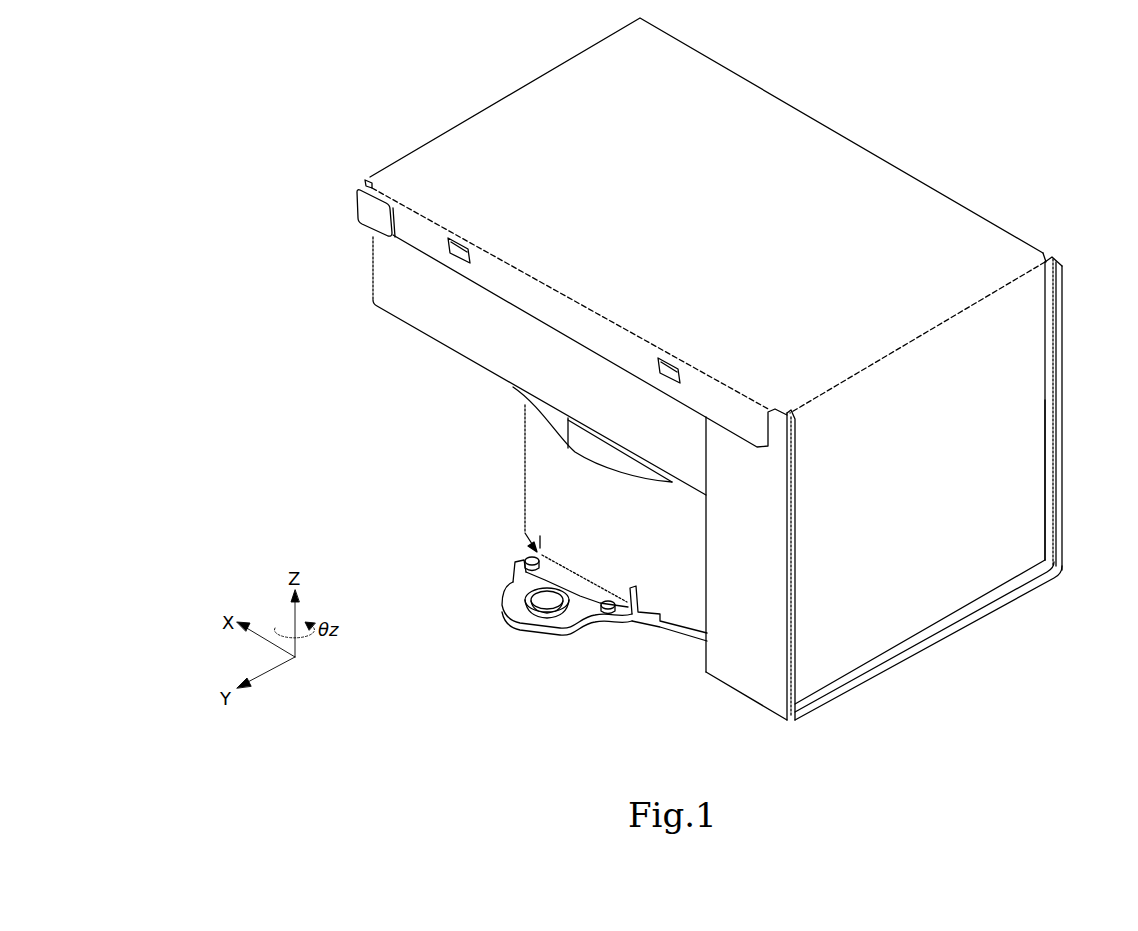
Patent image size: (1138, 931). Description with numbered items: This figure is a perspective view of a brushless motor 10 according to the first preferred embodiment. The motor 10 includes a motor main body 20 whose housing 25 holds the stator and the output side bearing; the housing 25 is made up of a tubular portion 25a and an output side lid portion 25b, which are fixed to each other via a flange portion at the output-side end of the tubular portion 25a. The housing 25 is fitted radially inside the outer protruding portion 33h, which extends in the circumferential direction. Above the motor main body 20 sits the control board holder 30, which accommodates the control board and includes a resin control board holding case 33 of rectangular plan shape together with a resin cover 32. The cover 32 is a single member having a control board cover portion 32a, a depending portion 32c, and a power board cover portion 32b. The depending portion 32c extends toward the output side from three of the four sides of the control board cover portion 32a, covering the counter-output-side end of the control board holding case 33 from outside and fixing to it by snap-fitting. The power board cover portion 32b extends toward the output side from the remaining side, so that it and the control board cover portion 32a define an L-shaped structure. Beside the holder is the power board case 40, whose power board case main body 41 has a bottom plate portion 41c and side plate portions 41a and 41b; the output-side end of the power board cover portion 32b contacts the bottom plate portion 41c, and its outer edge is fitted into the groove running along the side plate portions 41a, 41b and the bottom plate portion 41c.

The motor 10 is at (1030, 118).
The motor main body 20 is at (490, 629).
The housing 25 is at (618, 703).
The tubular portion 25a is at (597, 573).
The output side lid portion 25b is at (640, 621).
The control board holder 30 is at (746, 52).
The cover 32 is at (381, 151).
The control board cover portion 32a is at (852, 176).
The power board cover portion 32b is at (1030, 388).
The depending portion 32c is at (493, 278).
The control board holding case 33 is at (393, 268).
The outer protruding portion 33h is at (523, 404).
The power board case 40 is at (740, 712).
The power board case main body 41 is at (706, 681).
The side plate portion 41a is at (730, 673).
The side plate portion 41b is at (1057, 455).
The bottom plate portion 41c is at (962, 612).